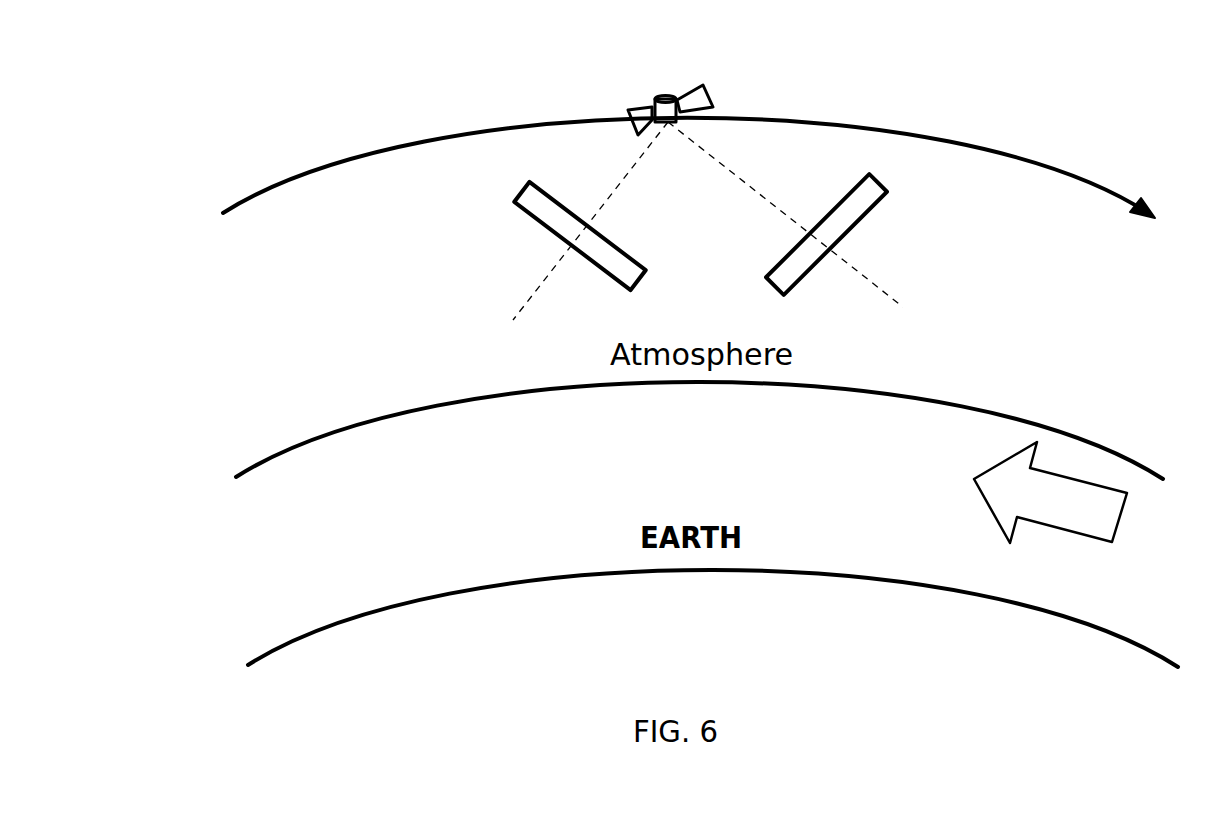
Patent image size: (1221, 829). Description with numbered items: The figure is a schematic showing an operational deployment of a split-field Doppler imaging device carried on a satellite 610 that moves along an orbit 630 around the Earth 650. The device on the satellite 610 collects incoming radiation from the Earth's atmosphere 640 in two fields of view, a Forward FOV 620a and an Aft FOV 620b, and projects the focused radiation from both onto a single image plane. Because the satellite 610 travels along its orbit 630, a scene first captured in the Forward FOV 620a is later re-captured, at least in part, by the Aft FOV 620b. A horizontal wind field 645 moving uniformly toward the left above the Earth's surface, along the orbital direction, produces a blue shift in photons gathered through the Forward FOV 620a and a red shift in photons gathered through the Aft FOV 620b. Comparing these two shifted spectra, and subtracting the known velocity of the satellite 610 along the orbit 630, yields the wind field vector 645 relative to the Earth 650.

The satellite 610 is at (662, 92).
The Forward FOV 620a is at (878, 207).
The Aft FOV 620b is at (525, 216).
The orbit 630 is at (661, 168).
The Earth's atmosphere 640 is at (665, 430).
The horizontal wind field 645 is at (1083, 498).
The Earth 650 is at (672, 618).